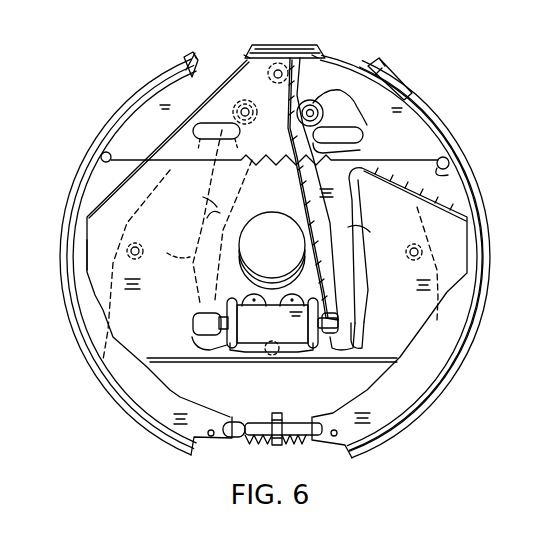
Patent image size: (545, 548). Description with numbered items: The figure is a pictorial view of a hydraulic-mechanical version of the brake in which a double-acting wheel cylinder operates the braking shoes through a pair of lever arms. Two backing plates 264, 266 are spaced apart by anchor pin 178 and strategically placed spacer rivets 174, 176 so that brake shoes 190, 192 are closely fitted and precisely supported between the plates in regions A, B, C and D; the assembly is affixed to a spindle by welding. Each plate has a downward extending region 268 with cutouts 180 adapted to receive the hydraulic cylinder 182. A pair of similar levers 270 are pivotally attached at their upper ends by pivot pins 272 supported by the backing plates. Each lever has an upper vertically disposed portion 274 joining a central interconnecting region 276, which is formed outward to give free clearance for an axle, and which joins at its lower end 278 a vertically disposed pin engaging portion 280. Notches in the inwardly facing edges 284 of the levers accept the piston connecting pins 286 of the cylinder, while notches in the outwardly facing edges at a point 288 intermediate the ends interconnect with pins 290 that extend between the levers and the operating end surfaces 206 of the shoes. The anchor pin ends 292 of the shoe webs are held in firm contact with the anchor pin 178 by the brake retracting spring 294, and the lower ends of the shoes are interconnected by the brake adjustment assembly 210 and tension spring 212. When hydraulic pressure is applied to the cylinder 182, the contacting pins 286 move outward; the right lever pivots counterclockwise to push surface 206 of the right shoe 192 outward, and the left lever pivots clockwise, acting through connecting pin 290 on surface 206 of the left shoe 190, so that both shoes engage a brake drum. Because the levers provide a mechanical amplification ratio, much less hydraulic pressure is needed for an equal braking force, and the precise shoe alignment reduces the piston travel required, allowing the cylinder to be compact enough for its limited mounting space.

The spacer rivet 174 is at (133, 247).
The spacer rivet 176 is at (425, 250).
The anchor pin 178 is at (271, 78).
The cutouts 180 is at (230, 347).
The hydraulic cylinder 182 is at (247, 334).
The brake shoe 190 is at (90, 364).
The brake shoe 192 is at (452, 371).
The operating end surface 206 is at (193, 130).
The brake adjustment assembly 210 is at (292, 414).
The tension spring 212 is at (290, 437).
The backing plate 264 is at (240, 58).
The backing plate 266 is at (322, 55).
The downward extending region 268 is at (130, 310).
The lever 270 is at (203, 197).
The pivot pin 272 is at (312, 103).
The upper vertically disposed portion 274 is at (333, 108).
The central interconnecting region 276 is at (207, 218).
The lower end 278 is at (200, 250).
The pin engaging portion 280 is at (200, 283).
The inwardly facing edge 284 is at (200, 345).
The piston connecting pin 286 is at (205, 314).
The point intermediate the ends 288 is at (360, 148).
The pin 290 is at (220, 163).
The anchor pin end 292 is at (283, 52).
The brake retracting spring 294 is at (453, 172).
The region A is at (87, 257).
The region B is at (247, 53).
The region C is at (320, 56).
The region D is at (467, 257).